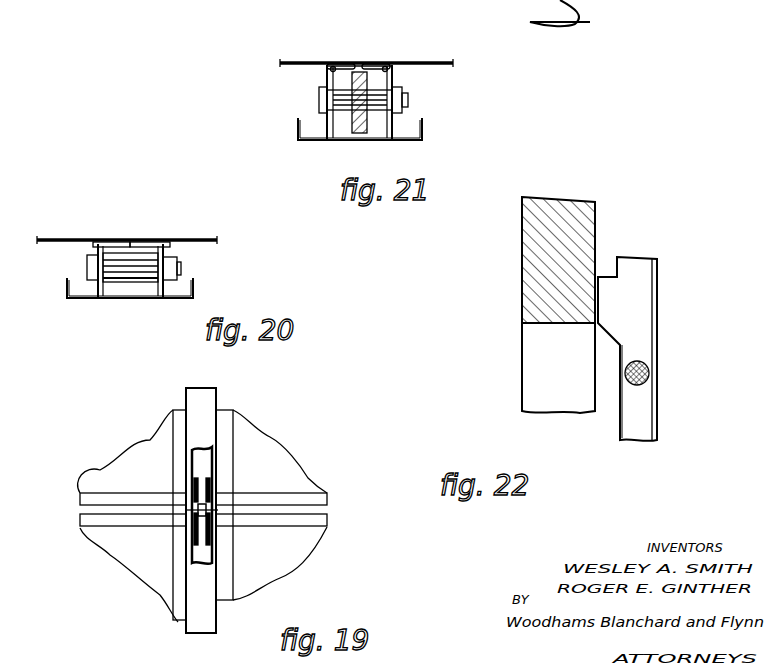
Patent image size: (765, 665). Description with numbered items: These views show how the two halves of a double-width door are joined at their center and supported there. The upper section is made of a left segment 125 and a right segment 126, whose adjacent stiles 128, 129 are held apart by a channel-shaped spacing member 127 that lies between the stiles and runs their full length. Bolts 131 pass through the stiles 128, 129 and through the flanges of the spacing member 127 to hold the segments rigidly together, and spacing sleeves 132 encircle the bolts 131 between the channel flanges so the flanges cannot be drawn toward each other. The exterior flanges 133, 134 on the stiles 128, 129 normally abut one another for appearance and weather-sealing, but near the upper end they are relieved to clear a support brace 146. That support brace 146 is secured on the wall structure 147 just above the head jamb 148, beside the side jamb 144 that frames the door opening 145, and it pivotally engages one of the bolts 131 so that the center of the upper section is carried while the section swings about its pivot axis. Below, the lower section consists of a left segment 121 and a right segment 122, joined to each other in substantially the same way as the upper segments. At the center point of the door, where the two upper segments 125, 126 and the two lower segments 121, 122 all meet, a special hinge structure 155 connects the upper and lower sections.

In FIG. 19, the left segment 121 is at (131, 557).
In FIG. 19, the right segment 122 is at (311, 545).
In FIG. 21, the left segment 125 is at (311, 61).
In FIG. 20, the left segment 125 is at (56, 238).
In FIG. 19, the left segment 125 is at (139, 452).
In FIG. 21, the right segment 126 is at (441, 59).
In FIG. 20, the right segment 126 is at (196, 240).
In FIG. 19, the right segment 126 is at (276, 442).
In FIG. 22, the right segment 126 is at (652, 423).
In FIG. 21, the channel-shaped spacing member 127 is at (348, 140).
In FIG. 20, the channel-shaped spacing member 127 is at (125, 298).
In FIG. 19, the channel-shaped spacing member 127 is at (205, 401).
In FIG. 21, the stile 128 is at (330, 80).
In FIG. 20, the stile 128 is at (97, 251).
In FIG. 19, the stile 128 is at (179, 447).
In FIG. 21, the stile 129 is at (395, 75).
In FIG. 20, the stile 129 is at (166, 291).
In FIG. 19, the stile 129 is at (226, 425).
In FIG. 22, the stile 129 is at (637, 396).
In FIG. 21, the bolt 131 is at (320, 100).
In FIG. 20, the bolt 131 is at (90, 265).
In FIG. 22, the bolt 131 is at (646, 368).
In FIG. 20, the spacing sleeve 132 is at (120, 278).
In FIG. 21, the exterior flange 133 is at (332, 62).
In FIG. 20, the exterior flange 133 is at (120, 238).
In FIG. 21, the exterior flange 134 is at (389, 60).
In FIG. 20, the exterior flange 134 is at (150, 240).
In FIG. 22, the side jamb 144 is at (522, 375).
In FIG. 22, the door opening 145 is at (548, 342).
In FIG. 21, the support brace 146 is at (364, 128).
In FIG. 22, the support brace 146 is at (637, 297).
In FIG. 22, the wall structure 147 is at (568, 204).
In FIG. 22, the head jamb 148 is at (521, 303).
In FIG. 19, the special hinge structure 155 is at (218, 506).